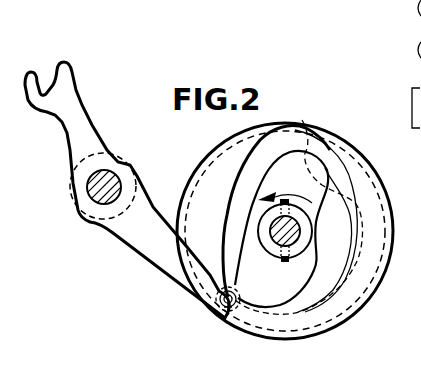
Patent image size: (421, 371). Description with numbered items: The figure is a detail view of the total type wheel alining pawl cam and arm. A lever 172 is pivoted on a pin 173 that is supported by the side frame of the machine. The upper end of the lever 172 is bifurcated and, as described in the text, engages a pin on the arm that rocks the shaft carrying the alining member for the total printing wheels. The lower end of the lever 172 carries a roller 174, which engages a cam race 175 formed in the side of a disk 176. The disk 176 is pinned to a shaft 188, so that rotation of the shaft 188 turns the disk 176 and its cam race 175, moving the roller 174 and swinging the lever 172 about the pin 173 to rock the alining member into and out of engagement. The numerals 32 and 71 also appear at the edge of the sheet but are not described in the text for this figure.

The lever 172 is at (99, 139).
The pin 173 is at (96, 201).
The roller 174 is at (223, 317).
The cam race 175 is at (224, 152).
The disk 176 is at (338, 312).
The shaft 188 is at (272, 240).
The frame member 32 is at (412, 97).
The member 71 is at (420, 353).